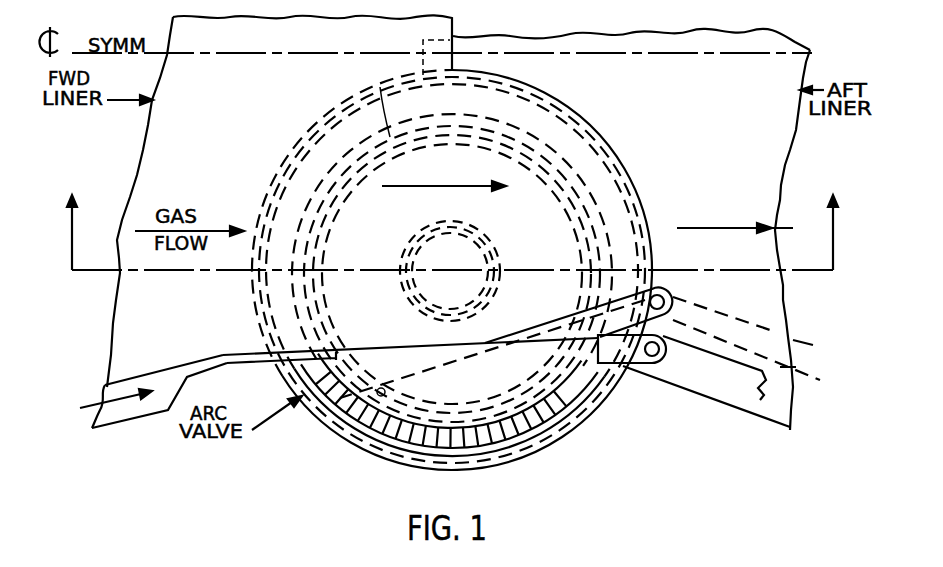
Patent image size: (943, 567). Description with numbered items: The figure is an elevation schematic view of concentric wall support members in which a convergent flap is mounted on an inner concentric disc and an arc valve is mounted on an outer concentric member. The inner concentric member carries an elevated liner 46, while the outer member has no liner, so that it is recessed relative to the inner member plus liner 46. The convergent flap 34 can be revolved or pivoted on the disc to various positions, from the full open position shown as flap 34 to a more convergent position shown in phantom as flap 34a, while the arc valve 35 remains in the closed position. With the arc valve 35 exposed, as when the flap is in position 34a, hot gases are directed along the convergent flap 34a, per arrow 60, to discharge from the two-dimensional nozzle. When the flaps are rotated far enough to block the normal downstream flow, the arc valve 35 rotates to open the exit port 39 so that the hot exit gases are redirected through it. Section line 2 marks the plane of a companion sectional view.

The section line 2- 2 is at (452, 217).
The convergent flap 34 is at (410, 353).
The convergent flap in more convergent position 34a is at (547, 323).
The arc valve 35 is at (342, 430).
The exit port 39 is at (380, 447).
The inner concentric member liner 46 is at (523, 219).
The arrow 60 is at (508, 330).